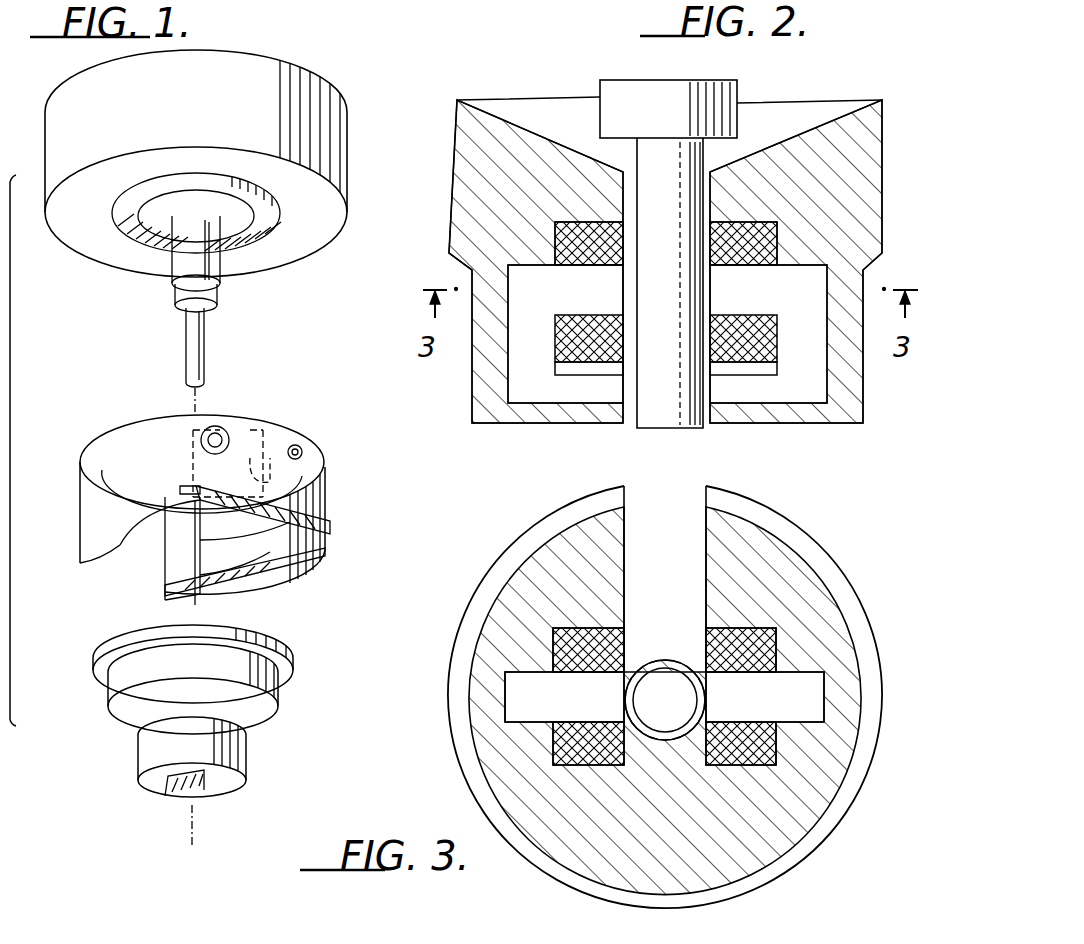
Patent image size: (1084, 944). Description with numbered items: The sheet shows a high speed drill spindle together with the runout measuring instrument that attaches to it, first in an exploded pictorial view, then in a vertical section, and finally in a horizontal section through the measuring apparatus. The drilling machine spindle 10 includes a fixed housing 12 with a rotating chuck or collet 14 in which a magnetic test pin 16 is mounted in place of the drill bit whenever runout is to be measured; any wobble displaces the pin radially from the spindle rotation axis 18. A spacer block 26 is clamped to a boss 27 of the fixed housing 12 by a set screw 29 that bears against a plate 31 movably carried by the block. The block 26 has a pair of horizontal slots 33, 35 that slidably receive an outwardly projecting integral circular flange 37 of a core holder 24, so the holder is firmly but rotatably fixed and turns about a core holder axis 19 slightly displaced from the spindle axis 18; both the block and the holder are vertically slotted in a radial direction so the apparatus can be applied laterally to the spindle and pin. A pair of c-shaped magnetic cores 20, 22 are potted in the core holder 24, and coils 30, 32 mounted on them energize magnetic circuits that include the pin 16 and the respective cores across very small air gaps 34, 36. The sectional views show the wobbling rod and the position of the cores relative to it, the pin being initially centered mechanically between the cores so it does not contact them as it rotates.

In FIG. 1, the drilling machine spindle 10 is at (340, 75).
In FIG. 1, the fixed housing 12 is at (348, 160).
In FIG. 1, the rotating chuck or collet 14 is at (226, 280).
In FIG. 1, the test pin 16 is at (187, 346).
In FIG. 2, the test pin 16 is at (690, 428).
In FIG. 3, the test pin 16 is at (671, 668).
In FIG. 1, the spindle rotation axis 18 is at (188, 608).
In FIG. 1, the core holder axis 19 is at (205, 608).
In FIG. 2, the c-shaped magnetic core 20 is at (518, 265).
In FIG. 3, the c-shaped magnetic core 20 is at (526, 672).
In FIG. 2, the c-shaped magnetic core 22 is at (806, 268).
In FIG. 3, the c-shaped magnetic core 22 is at (796, 674).
In FIG. 1, the core holder 24 is at (278, 694).
In FIG. 2, the core holder 24 is at (881, 207).
In FIG. 3, the core holder 24 is at (793, 558).
In FIG. 1, the spacer block 26 is at (326, 492).
In FIG. 2, the spacer block 26 is at (778, 104).
In FIG. 1, the boss 27 is at (280, 208).
In FIG. 1, the set screw 29 is at (300, 448).
In FIG. 2, the coil 30 is at (588, 222).
In FIG. 3, the coil 30 is at (588, 628).
In FIG. 1, the plate 31 is at (262, 406).
In FIG. 2, the coil 32 is at (752, 222).
In FIG. 3, the coil 32 is at (740, 628).
In FIG. 1, the horizontal slot 33 is at (186, 488).
In FIG. 2, the air gap 34 is at (628, 298).
In FIG. 3, the air gap 34 is at (623, 700).
In FIG. 1, the horizontal slot 35 is at (268, 568).
In FIG. 2, the air gap 36 is at (710, 298).
In FIG. 3, the air gap 36 is at (707, 700).
In FIG. 1, the circular flange 37 is at (270, 642).